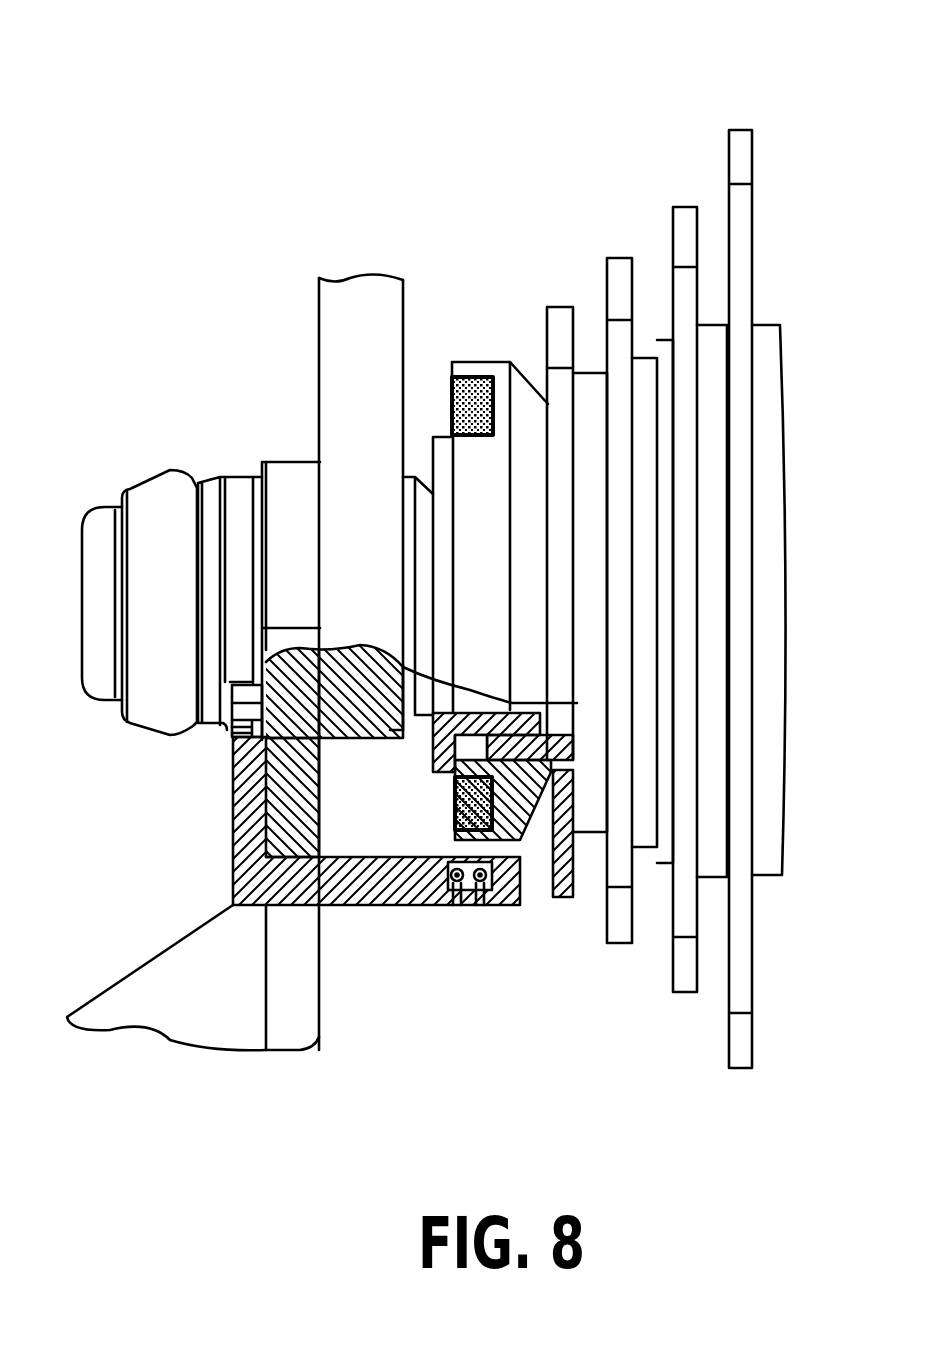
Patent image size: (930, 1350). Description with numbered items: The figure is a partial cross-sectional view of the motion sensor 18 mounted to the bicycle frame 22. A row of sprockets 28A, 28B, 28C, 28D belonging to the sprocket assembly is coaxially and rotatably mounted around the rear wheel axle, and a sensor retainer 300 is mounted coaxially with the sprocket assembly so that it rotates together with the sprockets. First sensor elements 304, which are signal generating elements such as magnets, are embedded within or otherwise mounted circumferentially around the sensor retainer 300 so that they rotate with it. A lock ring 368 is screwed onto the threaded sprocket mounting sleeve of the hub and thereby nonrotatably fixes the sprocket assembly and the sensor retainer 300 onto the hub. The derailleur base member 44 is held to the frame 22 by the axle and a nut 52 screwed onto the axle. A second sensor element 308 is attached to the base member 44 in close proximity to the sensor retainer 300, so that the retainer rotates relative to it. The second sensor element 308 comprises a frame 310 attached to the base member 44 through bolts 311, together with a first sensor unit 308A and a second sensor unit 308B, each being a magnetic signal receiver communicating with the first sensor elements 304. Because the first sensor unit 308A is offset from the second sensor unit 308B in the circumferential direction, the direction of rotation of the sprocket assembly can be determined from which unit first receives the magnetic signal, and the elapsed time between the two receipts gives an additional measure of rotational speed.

The motion sensor 18 is at (357, 943).
The bicycle frame 22 is at (345, 357).
The base member 44 is at (292, 477).
The nut 52 is at (133, 503).
The sprocket 28A is at (562, 307).
The sprocket 28B is at (613, 257).
The sprocket 28C is at (683, 205).
The sprocket 28D is at (745, 127).
The sensor retainer 300 is at (492, 358).
The first sensor elements 304 is at (452, 383).
The second sensor element 308 is at (479, 961).
The first sensor unit 308A is at (457, 908).
The second sensor unit 308B is at (480, 908).
The frame 310 is at (242, 837).
The bolts 311 is at (233, 747).
The lock ring 368 is at (433, 752).